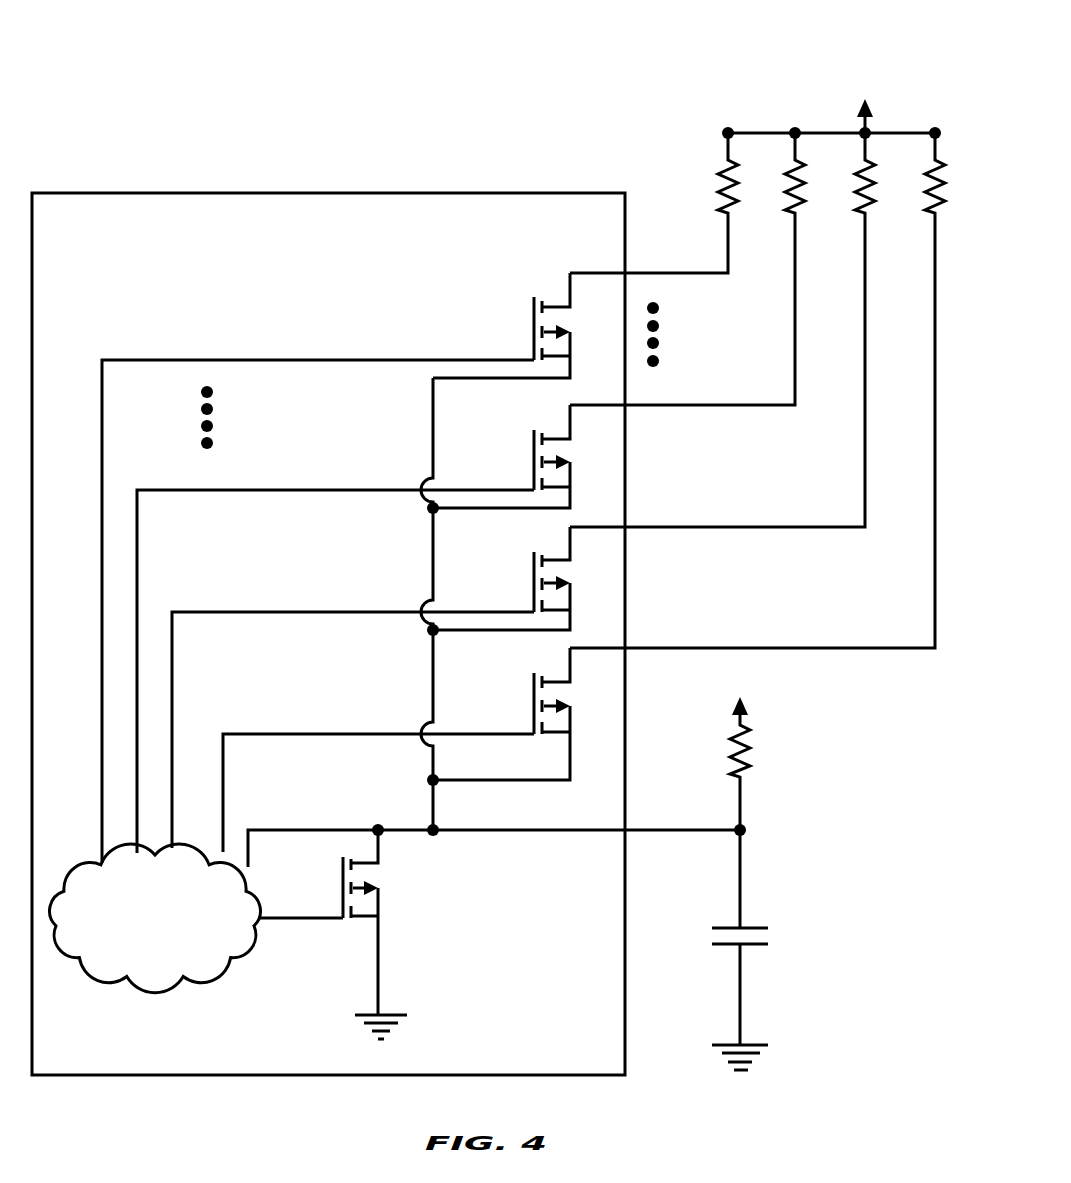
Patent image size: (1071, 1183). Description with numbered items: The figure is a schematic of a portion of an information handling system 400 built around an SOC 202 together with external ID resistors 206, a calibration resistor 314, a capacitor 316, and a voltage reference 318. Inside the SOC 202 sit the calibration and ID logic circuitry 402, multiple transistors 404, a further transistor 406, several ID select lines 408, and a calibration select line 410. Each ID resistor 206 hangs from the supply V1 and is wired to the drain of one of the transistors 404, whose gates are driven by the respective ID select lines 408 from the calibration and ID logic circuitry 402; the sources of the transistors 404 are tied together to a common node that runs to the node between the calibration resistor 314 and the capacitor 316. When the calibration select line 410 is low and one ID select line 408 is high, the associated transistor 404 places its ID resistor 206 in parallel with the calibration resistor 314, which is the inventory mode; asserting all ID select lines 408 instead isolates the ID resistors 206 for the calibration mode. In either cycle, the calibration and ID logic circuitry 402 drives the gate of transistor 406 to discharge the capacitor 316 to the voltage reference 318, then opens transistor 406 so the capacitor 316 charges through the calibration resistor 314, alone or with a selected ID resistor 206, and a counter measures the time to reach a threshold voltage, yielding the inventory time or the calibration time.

The information handling system 400 is at (618, 93).
The SOC 202 is at (328, 634).
The ID resistors 206 is at (720, 162).
The transistors 404 is at (530, 320).
The ID select lines 408 is at (226, 359).
The calibration select line 410 is at (326, 829).
The transistor 406 is at (342, 886).
The calibration and ID logic circuitry 402 is at (155, 918).
The calibration resistor 314 is at (728, 740).
The capacitor 316 is at (734, 928).
The voltage reference 318 is at (364, 1014).